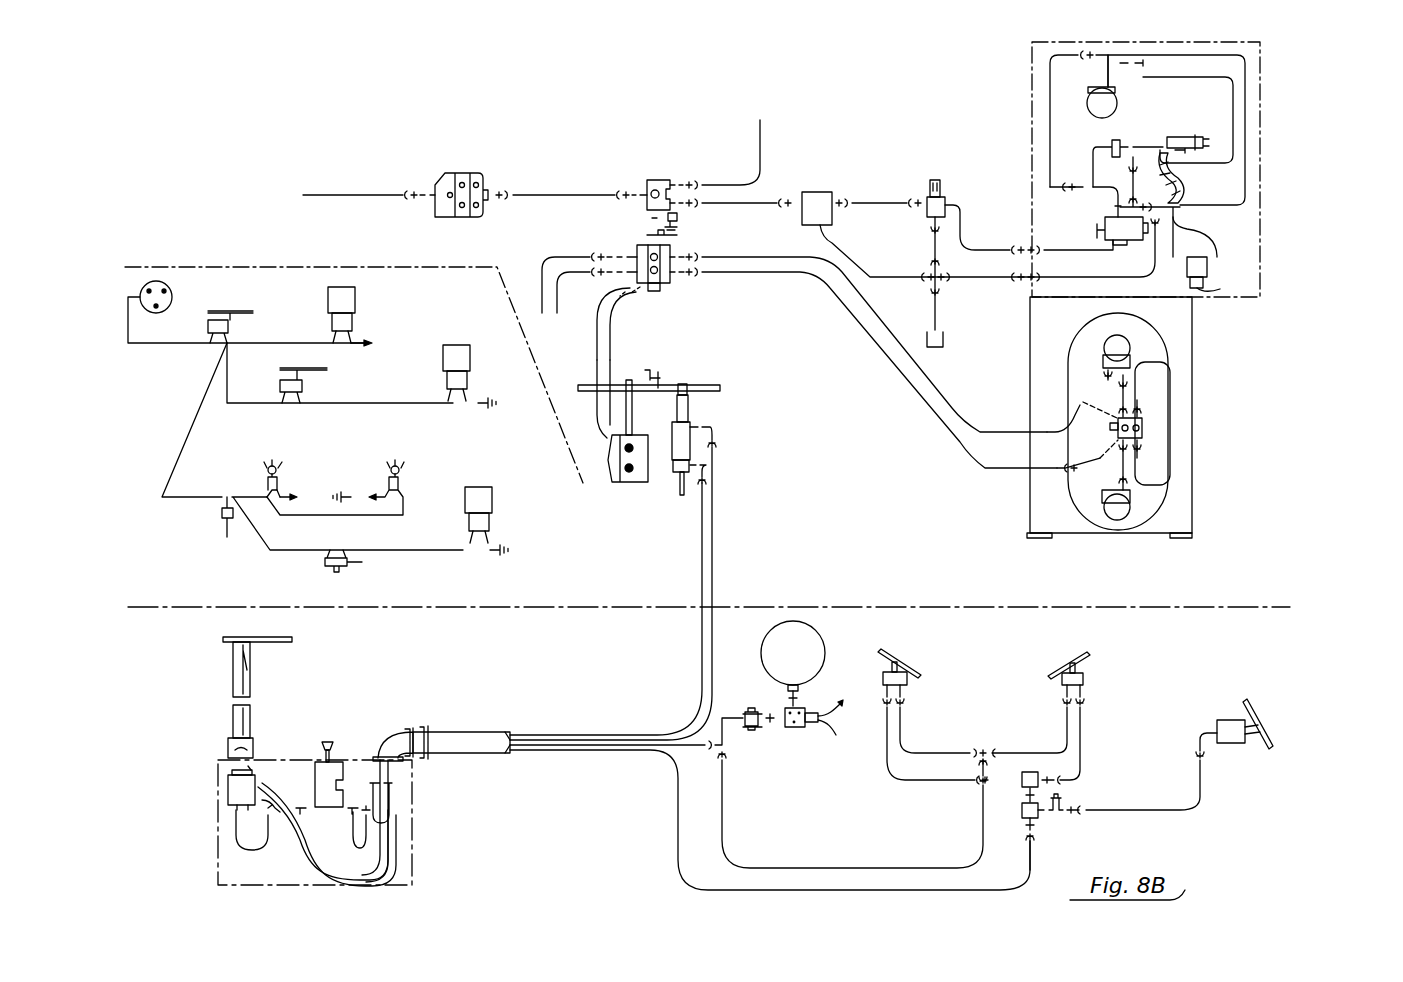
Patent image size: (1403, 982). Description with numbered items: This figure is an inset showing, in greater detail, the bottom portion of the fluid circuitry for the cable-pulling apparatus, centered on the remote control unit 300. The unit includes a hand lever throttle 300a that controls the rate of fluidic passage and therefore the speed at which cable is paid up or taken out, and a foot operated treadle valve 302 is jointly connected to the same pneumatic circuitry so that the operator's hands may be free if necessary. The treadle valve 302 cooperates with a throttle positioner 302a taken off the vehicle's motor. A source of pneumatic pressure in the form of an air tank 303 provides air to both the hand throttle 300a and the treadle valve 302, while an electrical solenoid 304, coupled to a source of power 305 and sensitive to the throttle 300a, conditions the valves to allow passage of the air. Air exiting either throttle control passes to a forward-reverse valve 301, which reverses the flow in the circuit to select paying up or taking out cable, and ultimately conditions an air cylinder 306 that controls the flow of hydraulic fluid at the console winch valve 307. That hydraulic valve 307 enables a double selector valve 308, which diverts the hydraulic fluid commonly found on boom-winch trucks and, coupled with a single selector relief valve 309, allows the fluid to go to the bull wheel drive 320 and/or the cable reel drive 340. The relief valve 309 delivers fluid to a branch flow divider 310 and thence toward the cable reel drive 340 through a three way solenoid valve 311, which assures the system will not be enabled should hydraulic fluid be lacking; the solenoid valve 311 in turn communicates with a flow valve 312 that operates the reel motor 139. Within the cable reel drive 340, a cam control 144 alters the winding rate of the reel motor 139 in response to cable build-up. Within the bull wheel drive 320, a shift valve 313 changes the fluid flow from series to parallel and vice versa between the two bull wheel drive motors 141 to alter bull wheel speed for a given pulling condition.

The reel motor 139 is at (1102, 105).
The hydraulic motor 141 is at (1117, 510).
The cam 144 is at (1185, 137).
The remote control unit 300 is at (245, 682).
The throttle 300a is at (230, 311).
The valve 301 is at (330, 742).
The treadle valve 302 is at (910, 665).
The throttle positioner 302a is at (1257, 710).
The air tank 303 is at (805, 652).
The electrical solenoid 304 is at (355, 287).
The source of power 305 is at (153, 282).
The air cylinder 306 is at (683, 447).
The hydraulic valve 307 is at (627, 478).
The double selector valve 308 is at (670, 283).
The single selector relief valve 309 is at (658, 180).
The branch flow divider 310 is at (807, 192).
The three way solenoid valve 311 is at (930, 182).
The flow valve 312 is at (1100, 222).
The shift valve 313 is at (1143, 453).
The bull wheel drive 320 is at (1192, 480).
The cable reel drive 340 is at (1262, 205).